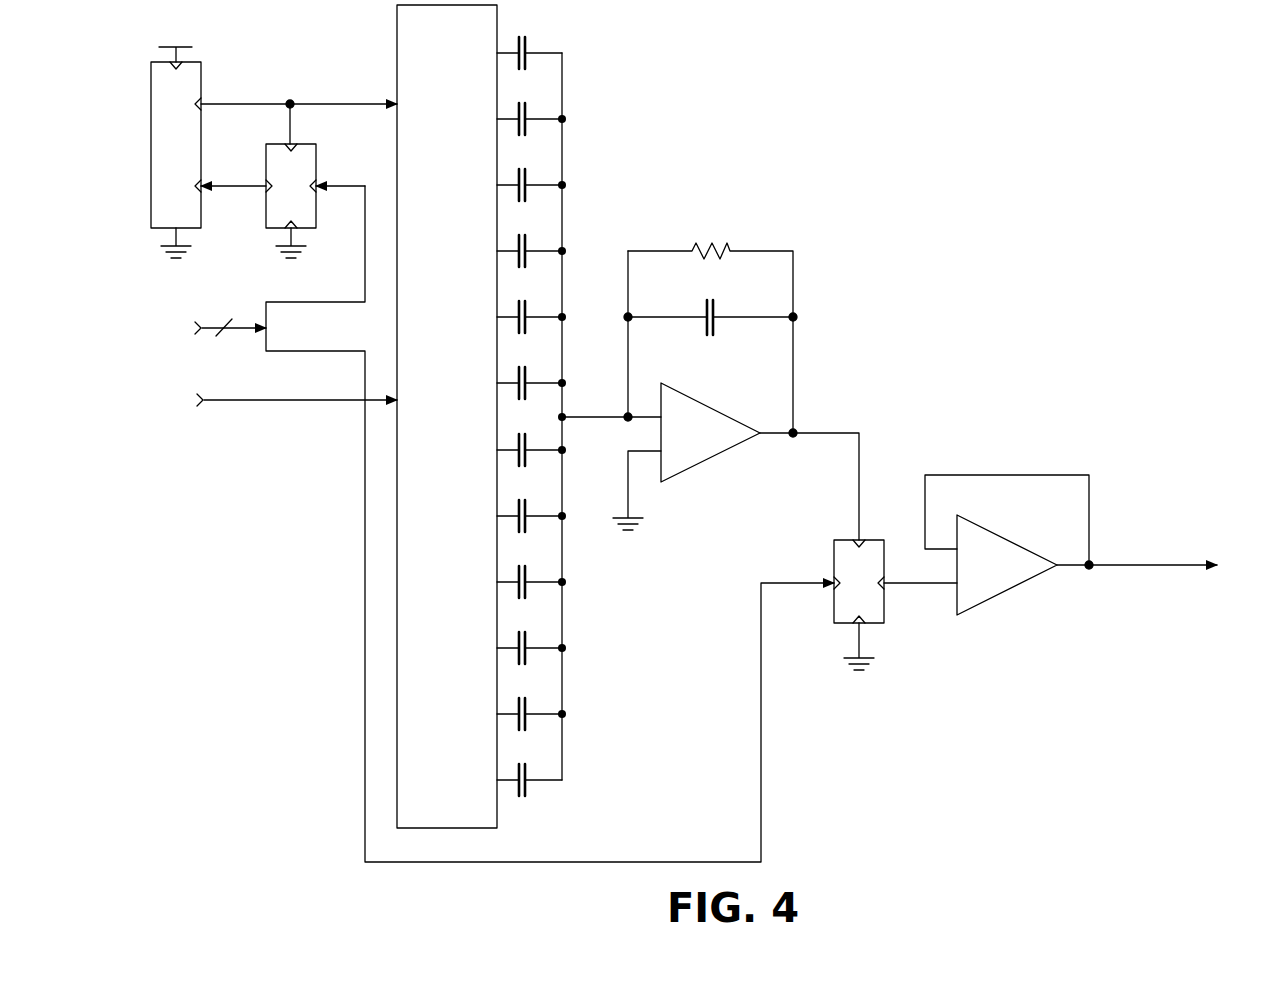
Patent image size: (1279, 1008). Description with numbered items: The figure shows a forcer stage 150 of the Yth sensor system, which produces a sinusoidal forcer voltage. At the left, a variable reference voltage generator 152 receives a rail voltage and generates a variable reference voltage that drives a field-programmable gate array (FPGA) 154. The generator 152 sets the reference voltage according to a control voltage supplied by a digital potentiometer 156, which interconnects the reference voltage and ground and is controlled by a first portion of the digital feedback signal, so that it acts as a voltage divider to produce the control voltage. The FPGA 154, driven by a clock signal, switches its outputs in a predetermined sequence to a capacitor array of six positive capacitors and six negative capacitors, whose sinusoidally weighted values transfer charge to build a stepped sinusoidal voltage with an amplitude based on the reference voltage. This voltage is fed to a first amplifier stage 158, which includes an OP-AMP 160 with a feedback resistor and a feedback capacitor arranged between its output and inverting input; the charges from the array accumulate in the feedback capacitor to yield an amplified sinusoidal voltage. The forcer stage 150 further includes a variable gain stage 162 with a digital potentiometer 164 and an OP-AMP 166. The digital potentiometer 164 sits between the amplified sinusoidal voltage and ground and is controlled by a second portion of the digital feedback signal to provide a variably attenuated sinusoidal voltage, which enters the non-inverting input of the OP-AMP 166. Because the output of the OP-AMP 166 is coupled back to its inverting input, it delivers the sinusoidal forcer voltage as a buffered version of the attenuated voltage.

The forcer stage 150 is at (1066, 92).
The variable reference voltage generator 152 is at (151, 100).
The field-programmable gate array (FPGA) 154 is at (397, 55).
The digital potentiometer 156 is at (316, 162).
The first amplifier stage 158 is at (710, 192).
The OP-AMP 160 is at (694, 466).
The variable gain stage 162 is at (920, 427).
The digital potentiometer 164 is at (884, 612).
The OP-AMP 166 is at (1000, 595).